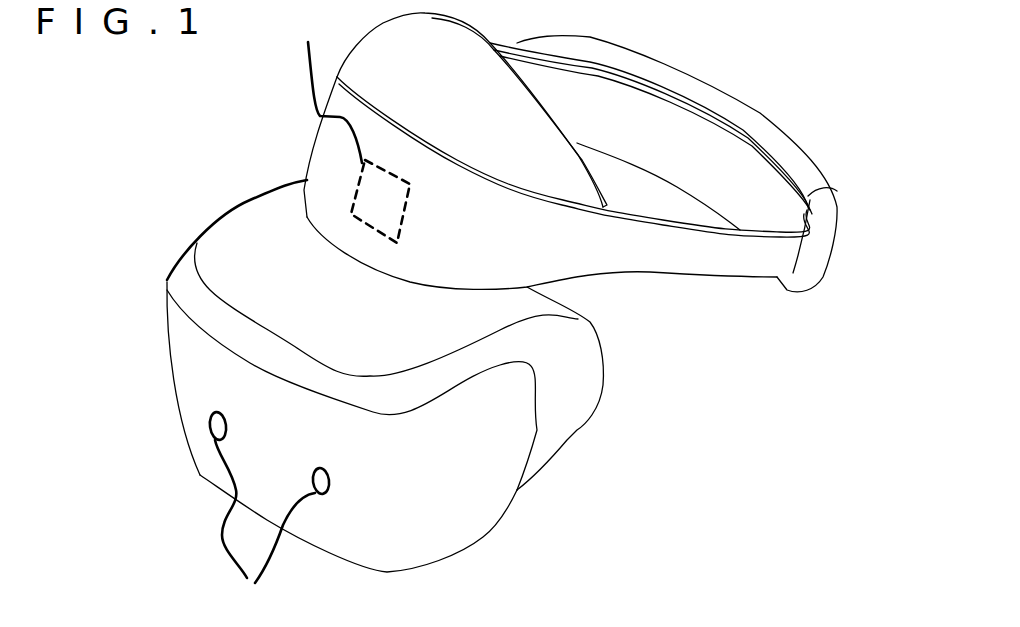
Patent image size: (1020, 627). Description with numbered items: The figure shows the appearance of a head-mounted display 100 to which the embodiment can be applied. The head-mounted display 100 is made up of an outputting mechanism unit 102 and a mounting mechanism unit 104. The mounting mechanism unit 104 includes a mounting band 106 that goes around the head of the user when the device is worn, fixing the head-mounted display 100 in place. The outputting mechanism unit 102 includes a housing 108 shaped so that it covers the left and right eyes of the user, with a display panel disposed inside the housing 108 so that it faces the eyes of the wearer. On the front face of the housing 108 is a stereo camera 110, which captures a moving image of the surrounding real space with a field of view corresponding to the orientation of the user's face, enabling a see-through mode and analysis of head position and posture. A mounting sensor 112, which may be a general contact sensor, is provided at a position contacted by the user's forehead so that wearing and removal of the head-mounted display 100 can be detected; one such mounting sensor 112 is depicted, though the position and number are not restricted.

The head-mounted display 100 is at (266, 100).
The outputting mechanism unit 102 is at (120, 167).
The mounting mechanism unit 104 is at (848, 89).
The mounting band 106 is at (695, 274).
The housing 108 is at (486, 537).
The stereo camera 110 is at (269, 516).
The mounting sensor 112 is at (350, 125).